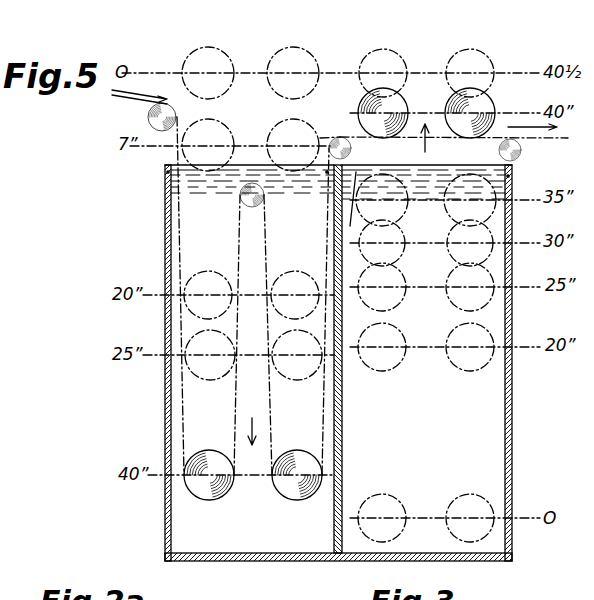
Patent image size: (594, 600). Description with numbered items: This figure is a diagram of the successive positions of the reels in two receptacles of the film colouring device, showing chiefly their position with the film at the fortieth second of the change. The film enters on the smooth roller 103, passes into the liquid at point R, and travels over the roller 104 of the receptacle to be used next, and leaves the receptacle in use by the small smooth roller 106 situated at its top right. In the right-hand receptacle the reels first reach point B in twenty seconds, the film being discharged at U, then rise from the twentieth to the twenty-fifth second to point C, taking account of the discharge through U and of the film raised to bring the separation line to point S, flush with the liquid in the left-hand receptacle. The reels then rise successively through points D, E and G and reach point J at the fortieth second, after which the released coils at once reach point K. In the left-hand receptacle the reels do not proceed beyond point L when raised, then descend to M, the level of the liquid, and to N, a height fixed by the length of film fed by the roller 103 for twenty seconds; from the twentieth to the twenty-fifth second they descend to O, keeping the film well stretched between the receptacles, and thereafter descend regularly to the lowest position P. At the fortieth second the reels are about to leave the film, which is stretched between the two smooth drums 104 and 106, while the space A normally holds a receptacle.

The smooth roller 103 is at (164, 104).
The roller of the receptacle 104 is at (351, 148).
The small smooth roller 106 is at (521, 151).
The point L' L is at (250, 73).
The point K' K is at (426, 72).
The level of the liquid M is at (250, 145).
The point J is at (426, 120).
The point R is at (168, 172).
The point S is at (327, 172).
The discharge point U is at (508, 176).
The point N is at (251, 295).
The point O is at (253, 355).
The bottom rollers P is at (253, 459).
The point E is at (426, 200).
The point D is at (426, 243).
The point C is at (426, 287).
The point B is at (166, 427).
The space A is at (426, 518).
The point G is at (517, 416).